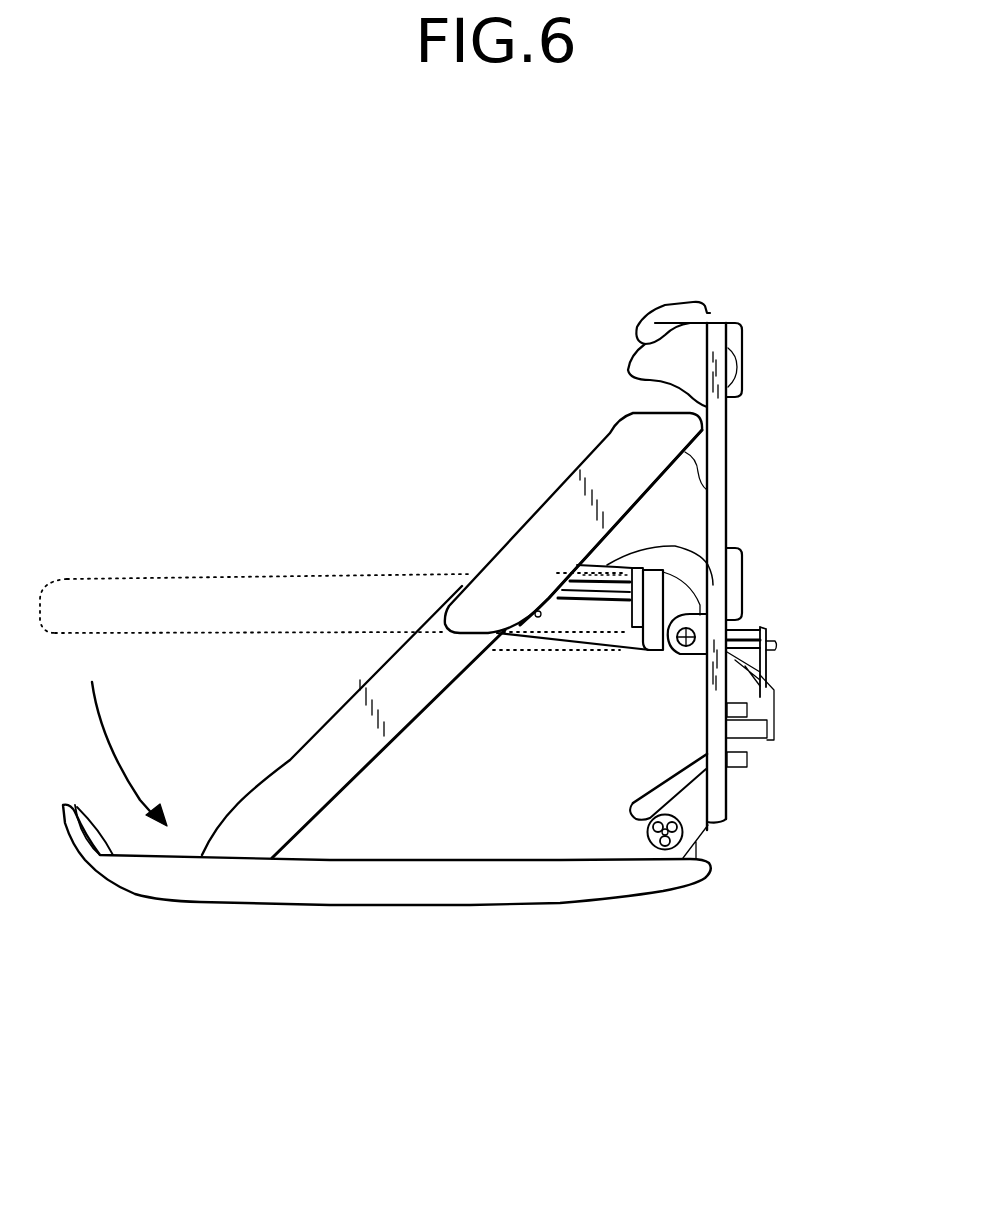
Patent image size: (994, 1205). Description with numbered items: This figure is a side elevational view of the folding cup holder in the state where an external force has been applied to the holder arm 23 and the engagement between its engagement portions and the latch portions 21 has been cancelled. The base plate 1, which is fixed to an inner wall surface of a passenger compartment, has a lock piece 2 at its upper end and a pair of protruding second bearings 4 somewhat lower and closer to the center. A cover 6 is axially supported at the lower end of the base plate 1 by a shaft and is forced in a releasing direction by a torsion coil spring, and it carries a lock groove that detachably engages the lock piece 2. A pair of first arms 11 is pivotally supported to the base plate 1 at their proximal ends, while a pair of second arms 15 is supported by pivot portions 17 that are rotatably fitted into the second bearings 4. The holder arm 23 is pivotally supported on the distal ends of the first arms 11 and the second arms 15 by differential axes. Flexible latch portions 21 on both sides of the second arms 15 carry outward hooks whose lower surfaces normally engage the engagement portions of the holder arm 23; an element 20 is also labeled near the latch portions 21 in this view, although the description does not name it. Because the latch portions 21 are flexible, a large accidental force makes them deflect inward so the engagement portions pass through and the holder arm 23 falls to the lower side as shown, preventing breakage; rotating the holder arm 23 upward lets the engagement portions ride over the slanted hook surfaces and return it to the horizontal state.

The base plate 1 is at (727, 427).
The lock piece 2 is at (670, 313).
The second bearings 4 is at (690, 597).
The cover 6 is at (390, 890).
The first arms 11 is at (560, 517).
The second arms 15 is at (568, 617).
The pivot portion 17 is at (700, 632).
The block 20 is at (645, 640).
The latch portions 21 is at (612, 567).
The holder arm 23 is at (163, 578).